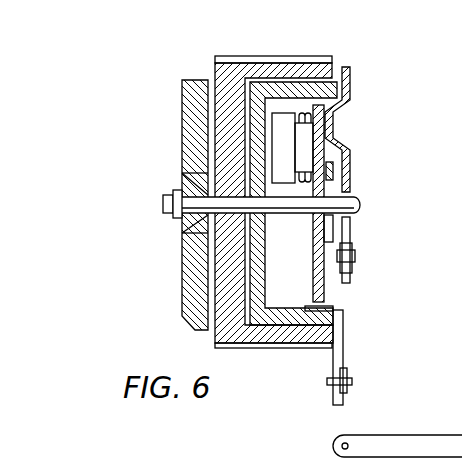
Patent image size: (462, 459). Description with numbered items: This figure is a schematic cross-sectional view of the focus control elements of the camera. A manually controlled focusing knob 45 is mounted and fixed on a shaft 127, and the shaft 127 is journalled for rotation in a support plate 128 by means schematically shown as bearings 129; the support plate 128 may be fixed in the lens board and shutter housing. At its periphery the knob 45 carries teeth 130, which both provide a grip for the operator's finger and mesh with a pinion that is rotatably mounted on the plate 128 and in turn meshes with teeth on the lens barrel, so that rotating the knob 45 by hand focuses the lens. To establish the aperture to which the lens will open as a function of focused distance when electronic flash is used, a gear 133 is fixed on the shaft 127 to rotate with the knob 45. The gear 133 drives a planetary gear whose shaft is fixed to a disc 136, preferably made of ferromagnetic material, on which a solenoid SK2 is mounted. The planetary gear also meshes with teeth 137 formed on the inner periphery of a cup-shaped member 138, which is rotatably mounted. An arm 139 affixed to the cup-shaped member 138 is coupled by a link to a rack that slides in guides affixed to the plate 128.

The focusing knob 45 is at (218, 70).
The support plate 128 is at (182, 124).
The bearings 129 is at (182, 226).
The teeth 130 is at (318, 57).
The solenoid SK2 is at (281, 106).
The gear 133 is at (345, 167).
The shaft 127 is at (362, 205).
The cup-shaped member 138 is at (262, 228).
The disc 136 is at (314, 262).
The teeth 137 is at (325, 309).
The arm 139 is at (343, 340).